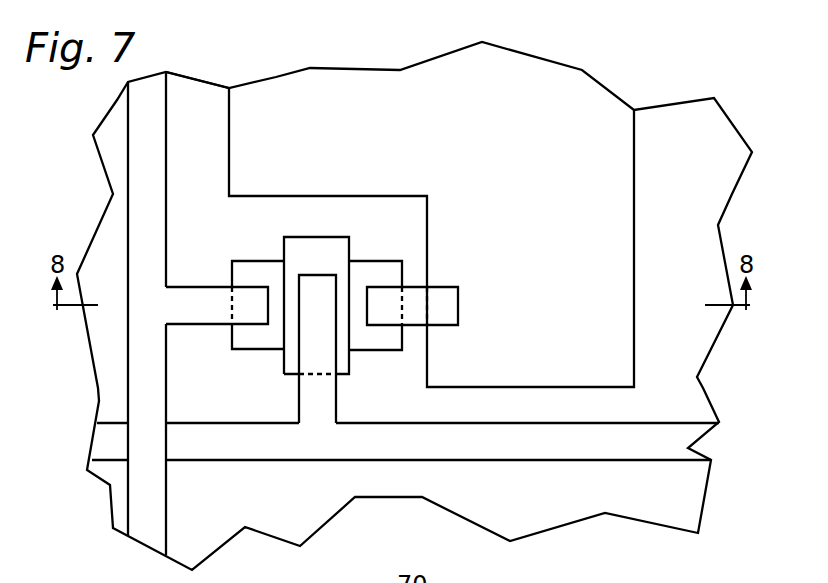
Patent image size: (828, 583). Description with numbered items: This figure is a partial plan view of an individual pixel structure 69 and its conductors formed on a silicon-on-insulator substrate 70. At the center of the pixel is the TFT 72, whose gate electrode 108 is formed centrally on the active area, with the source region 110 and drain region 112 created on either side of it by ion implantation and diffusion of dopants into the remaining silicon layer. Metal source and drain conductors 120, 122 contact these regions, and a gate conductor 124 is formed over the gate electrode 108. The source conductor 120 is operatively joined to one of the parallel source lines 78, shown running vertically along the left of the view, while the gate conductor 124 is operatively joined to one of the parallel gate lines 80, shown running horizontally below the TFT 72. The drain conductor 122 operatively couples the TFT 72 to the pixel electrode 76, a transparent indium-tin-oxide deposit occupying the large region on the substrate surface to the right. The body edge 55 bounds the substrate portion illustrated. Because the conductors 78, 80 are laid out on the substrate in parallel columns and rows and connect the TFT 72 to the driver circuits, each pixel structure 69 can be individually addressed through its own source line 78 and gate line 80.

The pixel structure 69 is at (536, 43).
The substrate 70 is at (707, 132).
The TFT 72 is at (316, 223).
The pixel electrode 76 is at (582, 98).
The source line 78 is at (143, 87).
The top edge 55 is at (197, 95).
The gate line 80 is at (491, 428).
The gate electrode 108 is at (325, 244).
The source region 110 is at (263, 337).
The drain region 112 is at (362, 269).
The source conductor 120 is at (252, 294).
The drain conductor 122 is at (439, 299).
The gate conductor 124 is at (324, 362).